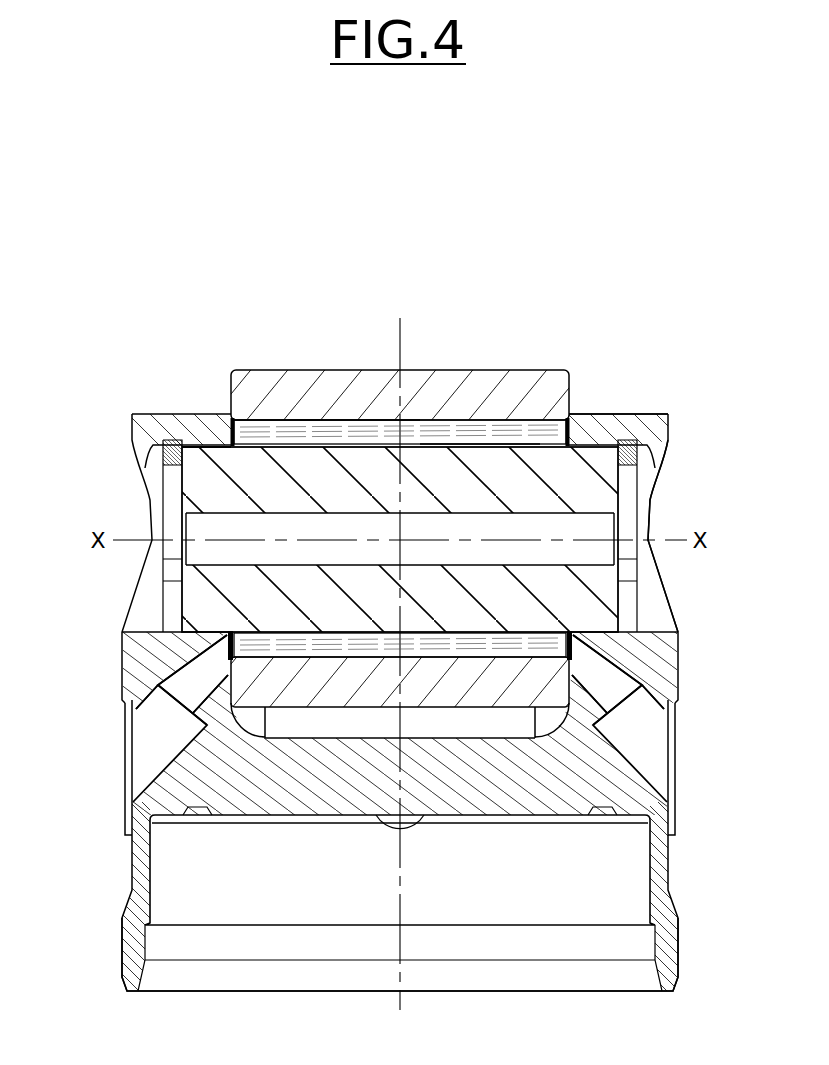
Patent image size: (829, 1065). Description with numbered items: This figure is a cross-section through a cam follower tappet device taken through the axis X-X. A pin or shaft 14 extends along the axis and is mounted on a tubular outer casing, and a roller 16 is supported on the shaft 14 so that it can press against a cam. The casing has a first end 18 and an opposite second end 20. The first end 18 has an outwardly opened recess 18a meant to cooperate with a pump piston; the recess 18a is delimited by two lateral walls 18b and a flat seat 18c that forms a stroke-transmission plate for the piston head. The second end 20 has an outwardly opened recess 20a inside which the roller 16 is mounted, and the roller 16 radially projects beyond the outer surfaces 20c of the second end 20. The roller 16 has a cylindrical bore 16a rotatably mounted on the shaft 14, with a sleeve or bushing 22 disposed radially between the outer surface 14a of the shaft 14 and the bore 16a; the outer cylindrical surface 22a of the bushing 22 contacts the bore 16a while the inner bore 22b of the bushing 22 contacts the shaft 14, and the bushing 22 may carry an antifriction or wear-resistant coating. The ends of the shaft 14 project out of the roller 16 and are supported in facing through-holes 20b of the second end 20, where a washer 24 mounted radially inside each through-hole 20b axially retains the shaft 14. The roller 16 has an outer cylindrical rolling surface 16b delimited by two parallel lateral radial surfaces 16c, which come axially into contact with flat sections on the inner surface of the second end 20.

The shaft 14 is at (198, 483).
The outer surface of the shaft 14a is at (215, 445).
The roller 16 is at (437, 377).
The bore of the roller 16a is at (270, 427).
The outer cylindrical surface of the roller 16b is at (315, 707).
The lateral radial surfaces of the roller 16c is at (227, 672).
The first end of the casing 18 is at (660, 868).
The recess of the first end 18a is at (648, 897).
The lateral walls 18b is at (128, 953).
The flat seat 18c is at (550, 813).
The second end of the casing 20 is at (160, 648).
The recess of the second end 20a is at (551, 709).
The through-holes 20b is at (660, 467).
The outer surfaces of the second end 20c is at (620, 413).
The bushing 22 is at (527, 430).
The outer cylindrical surface of the bushing 22a is at (345, 421).
The inner bore of the bushing 22b is at (498, 447).
The washer 24 is at (166, 459).